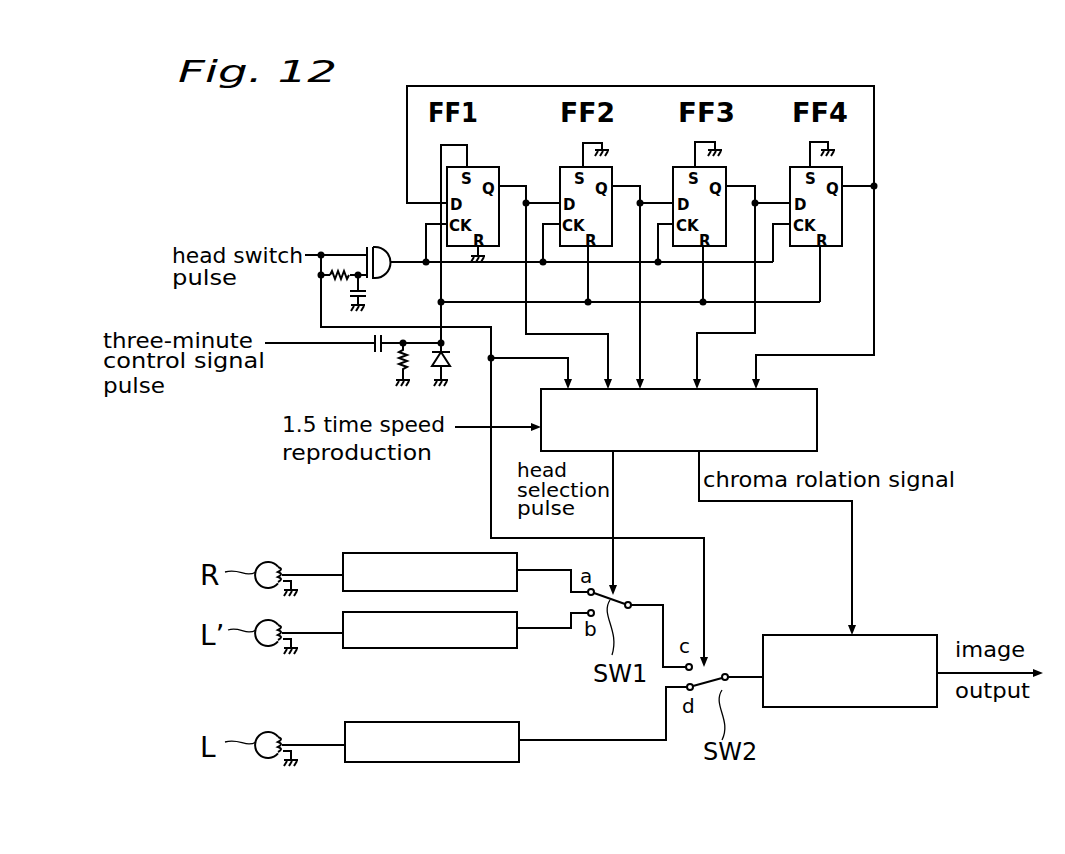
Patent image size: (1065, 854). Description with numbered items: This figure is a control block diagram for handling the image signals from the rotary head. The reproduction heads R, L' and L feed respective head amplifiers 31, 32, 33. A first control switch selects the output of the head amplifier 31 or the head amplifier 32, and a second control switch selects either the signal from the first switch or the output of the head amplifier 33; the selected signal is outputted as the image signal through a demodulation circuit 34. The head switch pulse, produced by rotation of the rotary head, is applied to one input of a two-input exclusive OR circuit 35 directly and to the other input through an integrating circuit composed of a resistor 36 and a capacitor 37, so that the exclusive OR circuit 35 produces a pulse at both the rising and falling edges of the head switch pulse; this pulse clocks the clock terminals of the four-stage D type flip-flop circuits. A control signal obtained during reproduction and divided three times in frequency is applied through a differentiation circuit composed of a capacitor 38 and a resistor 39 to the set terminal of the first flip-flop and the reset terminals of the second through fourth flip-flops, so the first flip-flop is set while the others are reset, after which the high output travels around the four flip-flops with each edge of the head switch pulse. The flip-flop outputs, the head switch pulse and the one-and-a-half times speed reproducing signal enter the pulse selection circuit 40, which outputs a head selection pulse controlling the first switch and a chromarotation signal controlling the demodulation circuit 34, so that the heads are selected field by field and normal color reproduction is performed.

The head amplifier 31 is at (343, 553).
The head amplifier 32 is at (355, 648).
The head amplifier 33 is at (355, 762).
The demodulation circuit 34 is at (897, 707).
The exclusive OR circuit 35 is at (383, 247).
The resistor 36 is at (333, 277).
The capacitor 37 is at (367, 295).
The capacitor 38 is at (377, 353).
The resistor 39 is at (400, 362).
The pulse selection circuit 40 is at (817, 414).